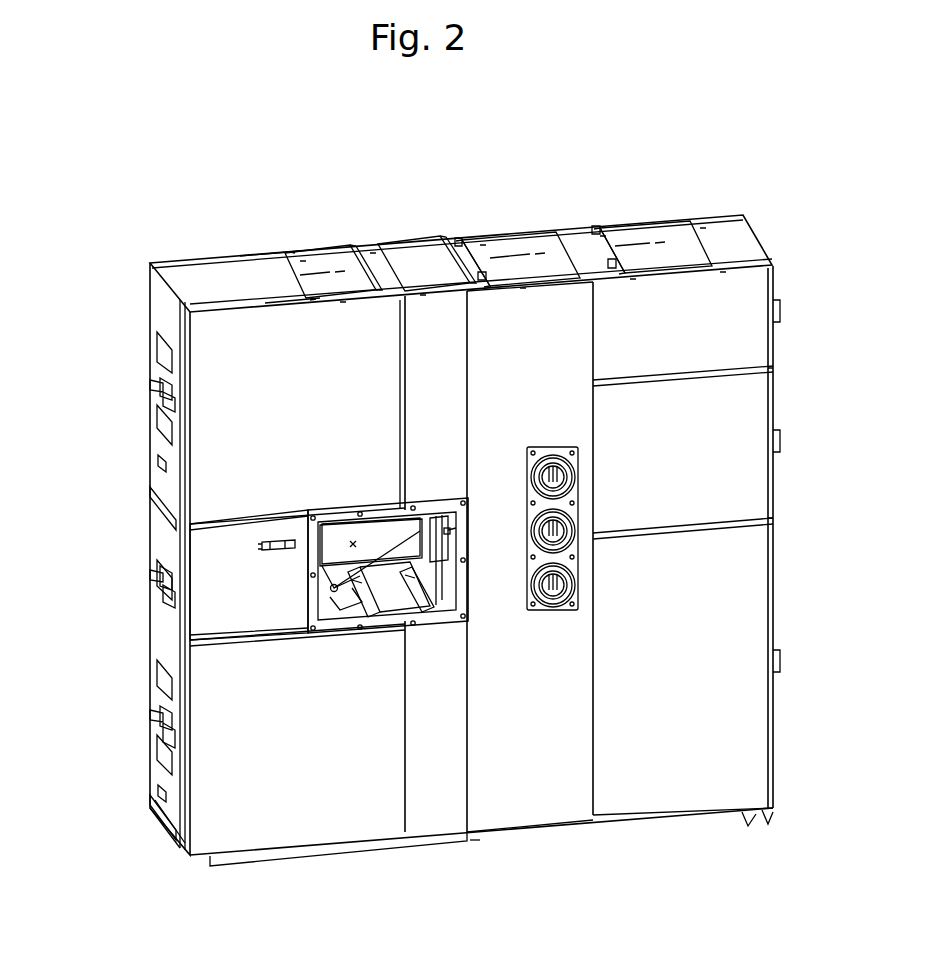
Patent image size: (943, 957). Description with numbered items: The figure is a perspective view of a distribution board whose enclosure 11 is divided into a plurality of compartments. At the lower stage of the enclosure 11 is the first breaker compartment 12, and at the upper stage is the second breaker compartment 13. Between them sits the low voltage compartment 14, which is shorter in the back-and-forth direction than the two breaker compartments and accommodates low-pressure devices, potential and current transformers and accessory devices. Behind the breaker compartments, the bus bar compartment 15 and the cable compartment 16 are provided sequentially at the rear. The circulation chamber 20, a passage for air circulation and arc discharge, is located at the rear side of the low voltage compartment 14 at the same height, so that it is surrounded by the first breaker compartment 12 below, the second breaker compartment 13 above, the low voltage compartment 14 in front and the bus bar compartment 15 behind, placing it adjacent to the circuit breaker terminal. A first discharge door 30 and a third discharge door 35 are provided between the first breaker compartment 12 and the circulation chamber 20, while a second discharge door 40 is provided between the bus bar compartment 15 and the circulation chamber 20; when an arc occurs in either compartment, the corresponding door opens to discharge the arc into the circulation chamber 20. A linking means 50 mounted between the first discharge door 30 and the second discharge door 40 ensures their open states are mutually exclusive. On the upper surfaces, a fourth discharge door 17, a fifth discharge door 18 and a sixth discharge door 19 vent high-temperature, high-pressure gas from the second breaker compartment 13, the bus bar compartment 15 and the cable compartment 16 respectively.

The enclosure 11 is at (107, 201).
The first breaker compartment 12 is at (250, 768).
The second breaker compartment 13 is at (250, 360).
The low voltage compartment 14 is at (215, 552).
The bus bar compartment 15 is at (550, 322).
The cable compartment 16 is at (712, 300).
The fourth discharge door 17 is at (318, 262).
The fifth discharge door 18 is at (496, 250).
The sixth discharge door 19 is at (630, 245).
The circulation chamber 20 is at (447, 531).
The first discharge door 30 is at (336, 603).
The third discharge door 35 is at (412, 600).
The second discharge door 40 is at (452, 563).
The linking means 50 is at (400, 545).